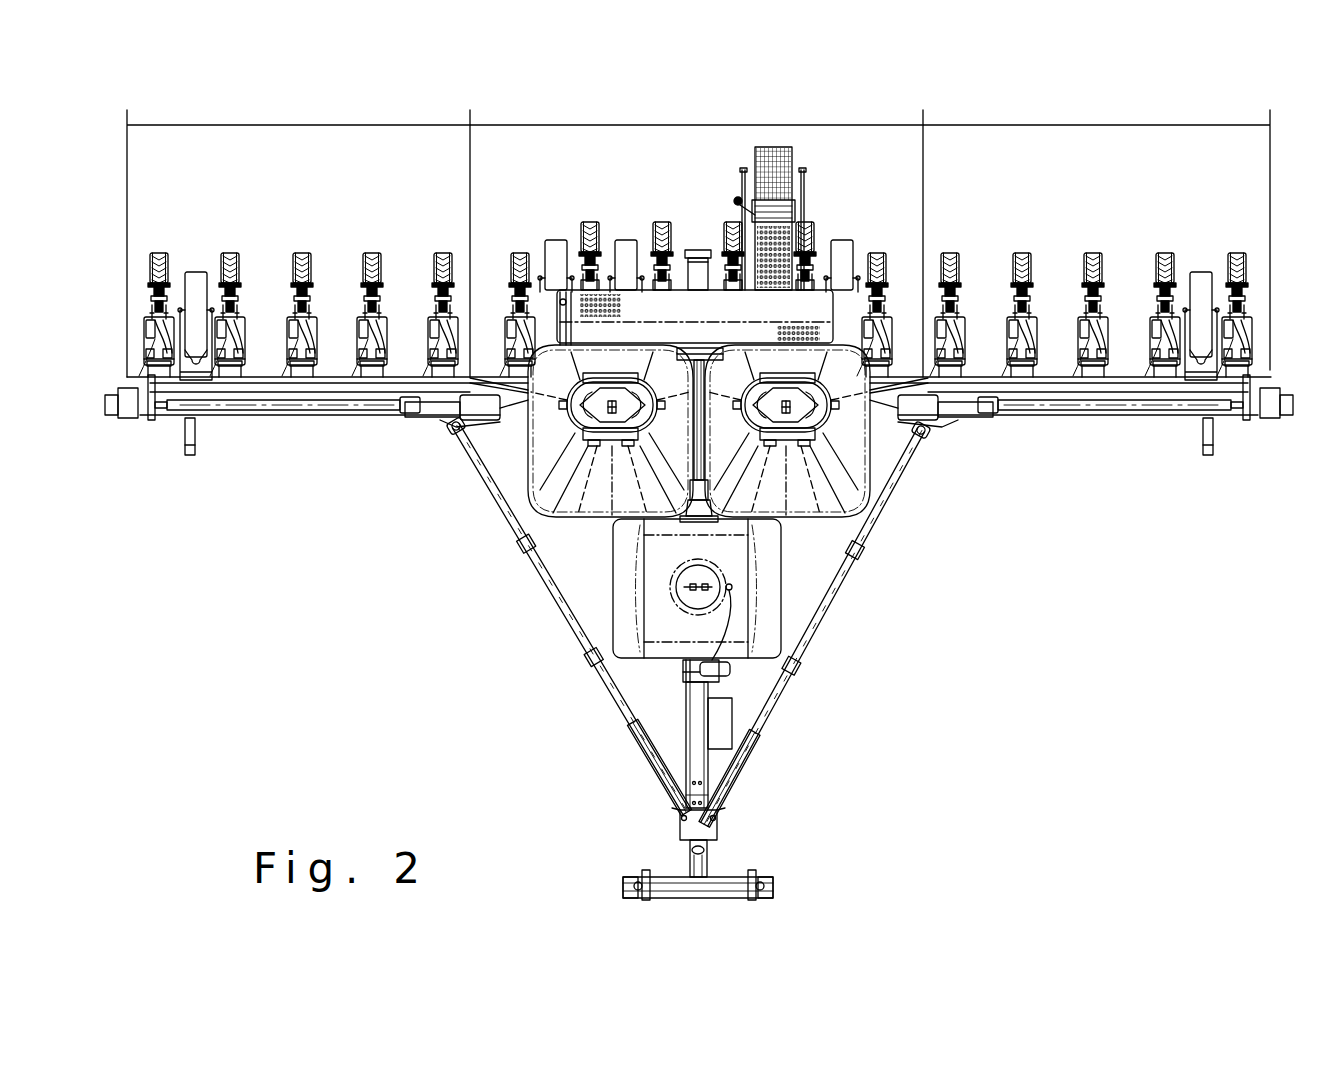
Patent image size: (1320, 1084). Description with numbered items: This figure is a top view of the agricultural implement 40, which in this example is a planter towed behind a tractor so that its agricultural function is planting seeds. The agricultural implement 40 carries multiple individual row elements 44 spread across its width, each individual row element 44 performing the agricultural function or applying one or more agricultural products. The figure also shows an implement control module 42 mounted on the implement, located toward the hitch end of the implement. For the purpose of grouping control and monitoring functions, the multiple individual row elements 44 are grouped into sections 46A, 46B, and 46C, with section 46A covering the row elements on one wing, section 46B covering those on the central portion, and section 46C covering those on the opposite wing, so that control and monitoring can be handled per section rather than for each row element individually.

The section 46A is at (285, 125).
The section 46B is at (684, 125).
The section 46C is at (1087, 125).
The individual row element 44 is at (302, 252).
The agricultural implement 40 is at (1077, 417).
The implement control module 42 is at (734, 723).